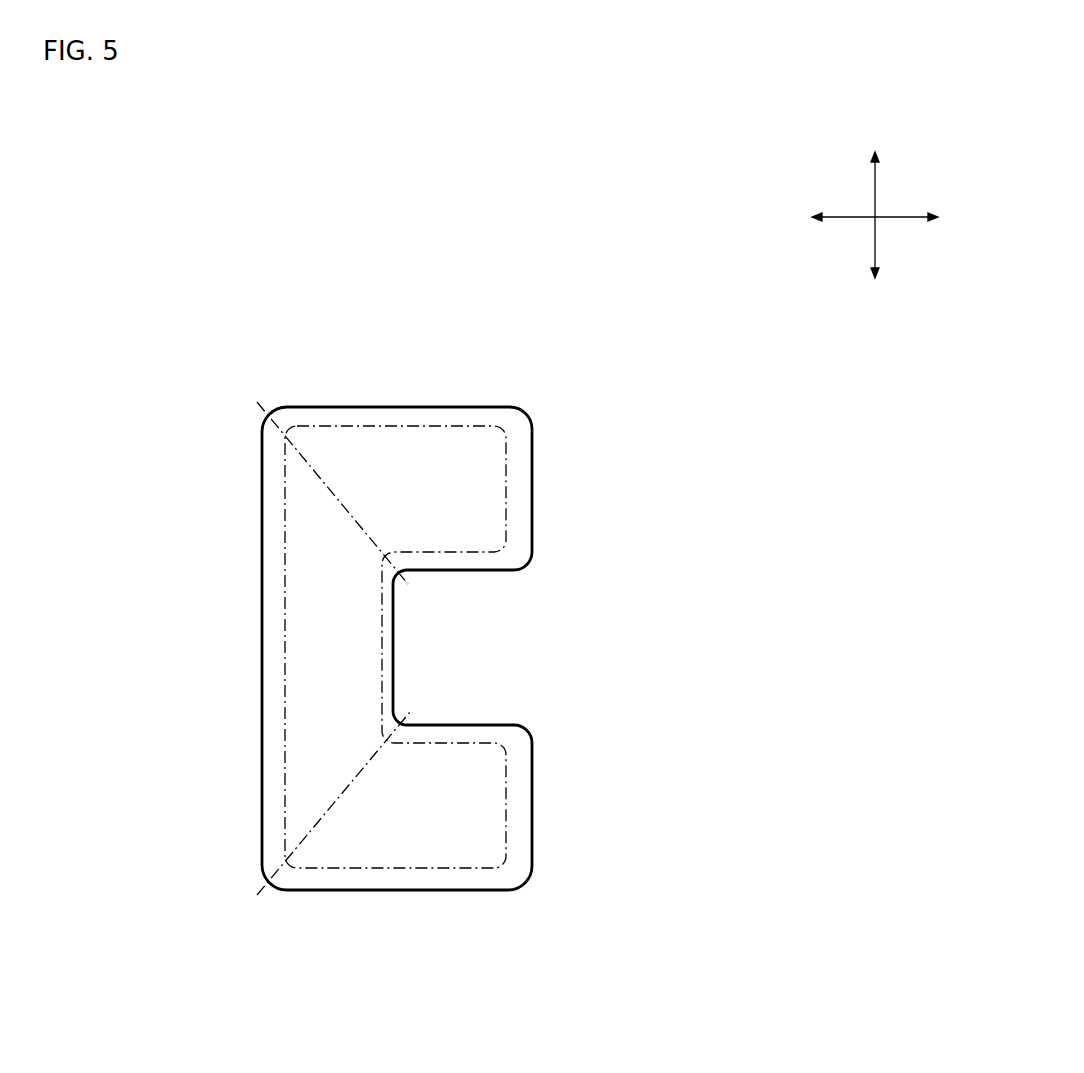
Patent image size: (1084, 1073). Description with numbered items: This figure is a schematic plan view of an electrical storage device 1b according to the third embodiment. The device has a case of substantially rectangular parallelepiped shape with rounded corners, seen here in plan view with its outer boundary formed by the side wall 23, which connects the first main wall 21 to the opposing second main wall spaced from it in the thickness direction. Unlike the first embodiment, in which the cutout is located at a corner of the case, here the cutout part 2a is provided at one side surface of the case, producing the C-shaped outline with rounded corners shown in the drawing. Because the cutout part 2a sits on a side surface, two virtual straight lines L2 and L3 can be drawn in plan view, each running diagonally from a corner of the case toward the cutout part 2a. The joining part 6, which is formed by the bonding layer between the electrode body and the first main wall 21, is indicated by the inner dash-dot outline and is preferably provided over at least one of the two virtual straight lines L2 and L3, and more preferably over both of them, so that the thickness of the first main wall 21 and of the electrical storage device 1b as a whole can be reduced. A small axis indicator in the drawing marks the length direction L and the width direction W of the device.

The electrical storage device 1b is at (553, 352).
The cutout part 2a is at (463, 725).
The joining part 6 is at (410, 423).
The first main wall 21 is at (276, 529).
The side wall 23 is at (260, 619).
The length direction L is at (873, 181).
The width direction W is at (905, 218).
The virtual straight line L2 is at (342, 793).
The virtual straight line L3 is at (336, 490).